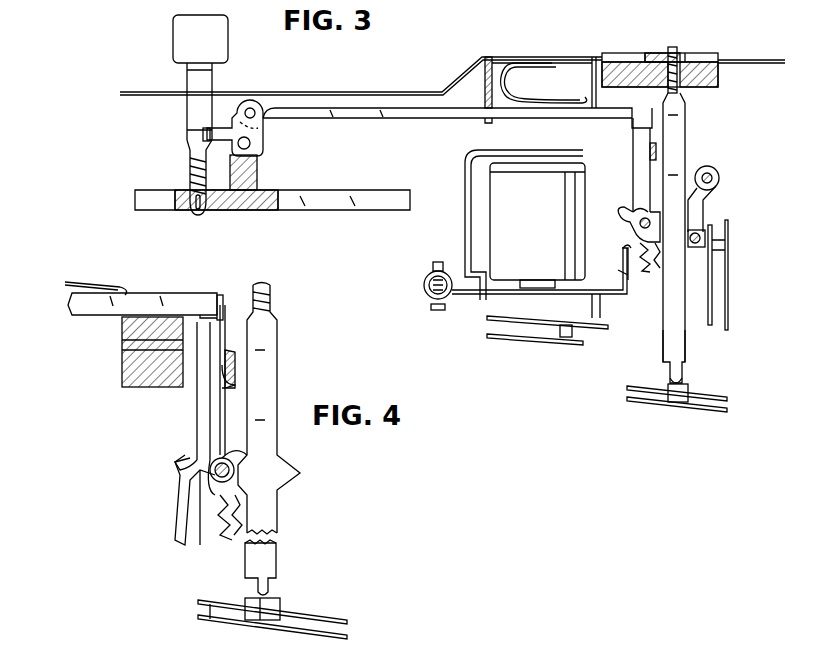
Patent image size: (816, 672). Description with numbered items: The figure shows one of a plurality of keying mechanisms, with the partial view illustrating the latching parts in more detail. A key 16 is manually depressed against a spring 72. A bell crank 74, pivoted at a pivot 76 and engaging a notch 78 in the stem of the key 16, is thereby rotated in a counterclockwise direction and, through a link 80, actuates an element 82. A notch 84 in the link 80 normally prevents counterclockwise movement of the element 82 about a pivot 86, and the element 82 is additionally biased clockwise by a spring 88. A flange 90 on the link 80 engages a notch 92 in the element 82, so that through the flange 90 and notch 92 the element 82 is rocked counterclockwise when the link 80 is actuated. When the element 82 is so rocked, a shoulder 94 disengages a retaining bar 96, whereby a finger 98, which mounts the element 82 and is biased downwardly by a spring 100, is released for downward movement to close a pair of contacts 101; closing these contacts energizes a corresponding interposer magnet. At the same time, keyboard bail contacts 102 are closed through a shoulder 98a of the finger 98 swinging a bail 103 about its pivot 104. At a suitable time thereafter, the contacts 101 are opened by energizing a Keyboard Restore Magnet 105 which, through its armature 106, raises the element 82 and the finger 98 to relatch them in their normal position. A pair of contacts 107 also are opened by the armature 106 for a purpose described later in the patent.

In FIG. 3, the key 16 is at (222, 40).
In FIG. 3, the spring 72 is at (190, 180).
In FIG. 3, the bell crank 74 is at (262, 134).
In FIG. 3, the pivot 76 is at (250, 145).
In FIG. 3, the notch 78 is at (203, 132).
In FIG. 3, the link 80 is at (398, 120).
In FIG. 4, the link 80 is at (88, 317).
In FIG. 3, the element 82 is at (635, 147).
In FIG. 4, the element 82 is at (196, 422).
In FIG. 4, the notch 84 is at (208, 293).
In FIG. 4, the pivot 86 is at (230, 465).
In FIG. 3, the spring 88 is at (655, 272).
In FIG. 4, the spring 88 is at (225, 540).
In FIG. 4, the flange 90 is at (222, 296).
In FIG. 4, the notch 92 is at (222, 330).
In FIG. 4, the shoulder 94 is at (236, 385).
In FIG. 4, the retaining bar 96 is at (236, 362).
In FIG. 3, the finger 98 is at (680, 342).
In FIG. 4, the finger 98 is at (270, 560).
In FIG. 3, the shoulder 98a is at (650, 224).
In FIG. 3, the spring 100 is at (680, 90).
In FIG. 4, the spring 100 is at (270, 292).
In FIG. 3, the pair of contacts 101 is at (627, 394).
In FIG. 4, the pair of contacts 101 is at (198, 606).
In FIG. 3, the keyboard bail contacts 102 is at (728, 232).
In FIG. 3, the bail 103 is at (698, 236).
In FIG. 3, the pivot 104 is at (710, 176).
In FIG. 3, the Keyboard Restore Magnet 105 is at (540, 221).
In FIG. 3, the armature 106 is at (530, 303).
In FIG. 3, the pair of contacts 107 is at (560, 345).